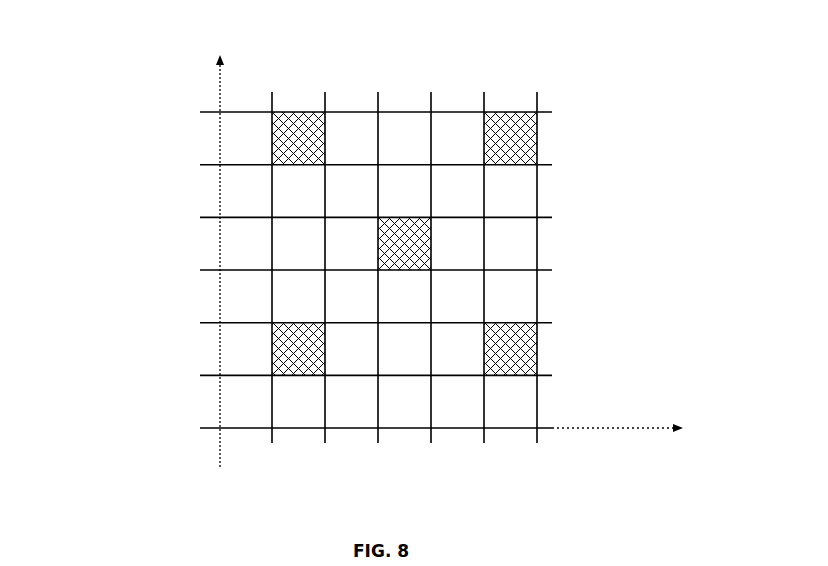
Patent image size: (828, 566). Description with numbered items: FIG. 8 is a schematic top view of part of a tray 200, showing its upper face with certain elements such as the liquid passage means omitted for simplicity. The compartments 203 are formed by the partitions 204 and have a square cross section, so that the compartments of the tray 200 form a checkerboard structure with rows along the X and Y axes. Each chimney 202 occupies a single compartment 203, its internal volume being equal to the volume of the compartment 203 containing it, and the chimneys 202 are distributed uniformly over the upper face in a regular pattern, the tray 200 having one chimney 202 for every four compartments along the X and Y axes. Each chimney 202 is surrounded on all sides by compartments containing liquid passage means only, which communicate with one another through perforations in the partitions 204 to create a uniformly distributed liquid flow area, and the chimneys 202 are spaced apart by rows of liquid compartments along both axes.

The tray 200 is at (367, 288).
The chimney 202 is at (528, 133).
The compartment 203 is at (242, 195).
The partition 204 is at (515, 216).